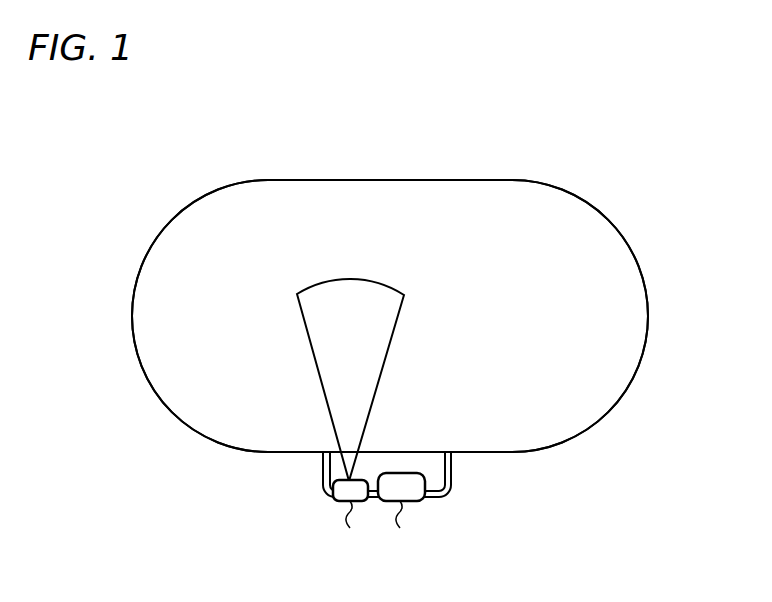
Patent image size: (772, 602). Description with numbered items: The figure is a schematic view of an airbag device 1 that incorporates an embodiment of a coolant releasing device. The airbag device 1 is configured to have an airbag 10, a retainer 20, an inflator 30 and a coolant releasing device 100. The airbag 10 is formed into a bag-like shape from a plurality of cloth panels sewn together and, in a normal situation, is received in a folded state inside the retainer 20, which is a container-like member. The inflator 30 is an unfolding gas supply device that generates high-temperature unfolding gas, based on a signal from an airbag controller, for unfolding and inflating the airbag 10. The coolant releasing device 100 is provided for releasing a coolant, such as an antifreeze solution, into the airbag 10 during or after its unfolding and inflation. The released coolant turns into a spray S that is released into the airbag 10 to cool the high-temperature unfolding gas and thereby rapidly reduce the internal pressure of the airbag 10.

The airbag device 1 is at (140, 218).
The airbag 10 is at (618, 235).
The spray S is at (314, 353).
The retainer 20 is at (448, 477).
The coolant releasing device 100 is at (339, 492).
The inflator 30 is at (405, 500).